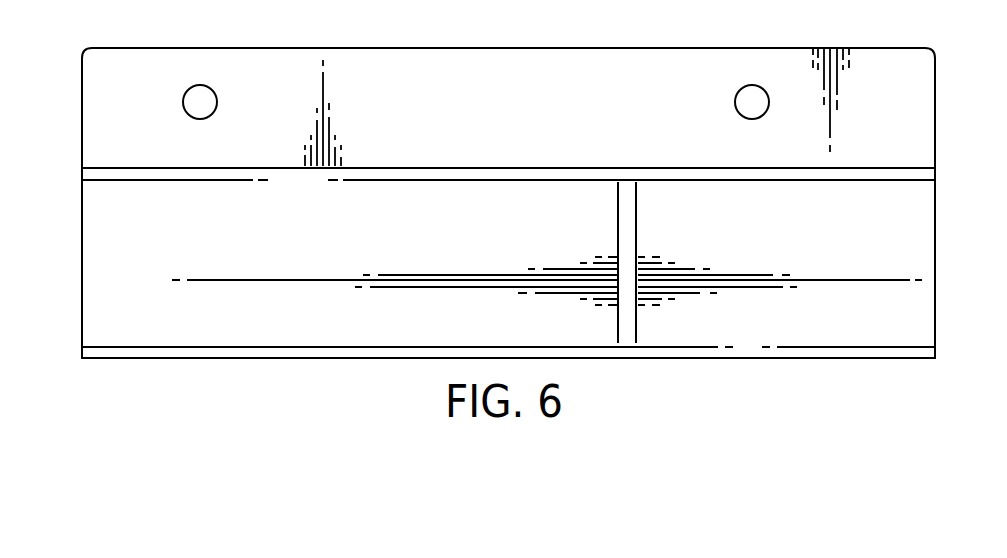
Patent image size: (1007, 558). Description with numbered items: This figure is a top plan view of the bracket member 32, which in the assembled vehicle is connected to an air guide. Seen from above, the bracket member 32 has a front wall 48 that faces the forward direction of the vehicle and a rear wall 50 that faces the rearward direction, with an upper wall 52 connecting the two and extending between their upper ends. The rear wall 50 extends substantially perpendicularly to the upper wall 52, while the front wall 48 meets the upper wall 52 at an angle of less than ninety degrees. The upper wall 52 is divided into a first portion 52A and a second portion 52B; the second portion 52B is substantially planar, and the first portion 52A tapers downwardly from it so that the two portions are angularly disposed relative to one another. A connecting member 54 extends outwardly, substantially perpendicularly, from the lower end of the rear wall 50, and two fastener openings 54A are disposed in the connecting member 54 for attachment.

The bracket member 32 is at (74, 310).
The front wall 48 is at (680, 357).
The rear wall 50 is at (670, 181).
The upper wall 52 is at (417, 317).
The first portion 52A is at (849, 322).
The second portion 52B is at (216, 325).
The connecting member 54 is at (409, 82).
The fastener opening 54A is at (188, 89).